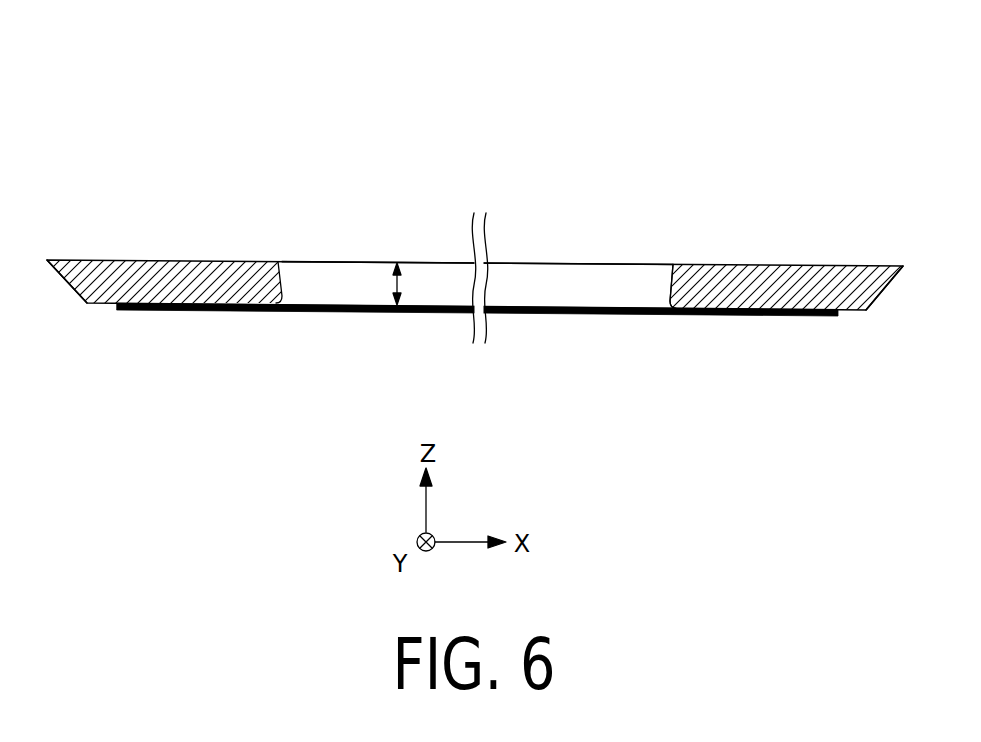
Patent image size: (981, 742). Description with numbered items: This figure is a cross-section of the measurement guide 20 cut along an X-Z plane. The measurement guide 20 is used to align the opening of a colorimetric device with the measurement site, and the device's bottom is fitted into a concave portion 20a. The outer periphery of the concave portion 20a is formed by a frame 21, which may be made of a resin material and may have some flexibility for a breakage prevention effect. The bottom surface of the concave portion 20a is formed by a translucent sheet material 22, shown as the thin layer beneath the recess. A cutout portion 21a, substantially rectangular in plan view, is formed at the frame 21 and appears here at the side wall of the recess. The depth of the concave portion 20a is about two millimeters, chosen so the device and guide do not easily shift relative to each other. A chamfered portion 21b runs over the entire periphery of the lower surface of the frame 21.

The measurement guide 20 is at (479, 223).
The concave portion 20a is at (328, 288).
The frame 21 is at (145, 260).
The cutout portion 21a is at (657, 265).
The chamfered portion 21b is at (65, 285).
The sheet material 22 is at (555, 305).